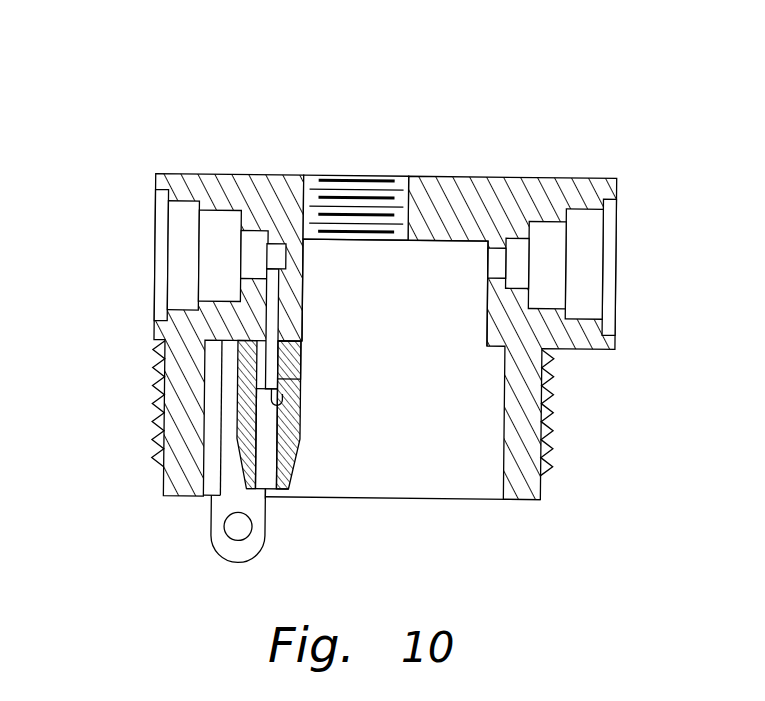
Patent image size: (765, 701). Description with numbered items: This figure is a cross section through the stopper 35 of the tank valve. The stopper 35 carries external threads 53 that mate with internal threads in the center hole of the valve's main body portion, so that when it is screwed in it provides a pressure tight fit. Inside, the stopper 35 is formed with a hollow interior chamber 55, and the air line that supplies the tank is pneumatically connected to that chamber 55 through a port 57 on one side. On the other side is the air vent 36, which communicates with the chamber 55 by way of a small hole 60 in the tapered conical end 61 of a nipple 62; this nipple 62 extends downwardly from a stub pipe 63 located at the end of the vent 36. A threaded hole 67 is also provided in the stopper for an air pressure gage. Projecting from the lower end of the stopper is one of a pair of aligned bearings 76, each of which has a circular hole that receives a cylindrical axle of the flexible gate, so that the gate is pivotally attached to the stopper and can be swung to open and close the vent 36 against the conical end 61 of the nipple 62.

The stopper 35 is at (152, 106).
The air vent 36 is at (273, 260).
The external threads 53 is at (553, 437).
The hollow interior chamber 55 is at (450, 403).
The port 57 is at (487, 258).
The small hole 60 is at (276, 490).
The tapered conical end 61 is at (296, 465).
The nipple 62 is at (298, 362).
The stub pipe 63 is at (300, 400).
The threaded hole 67 is at (355, 190).
The bearing 76 is at (250, 560).